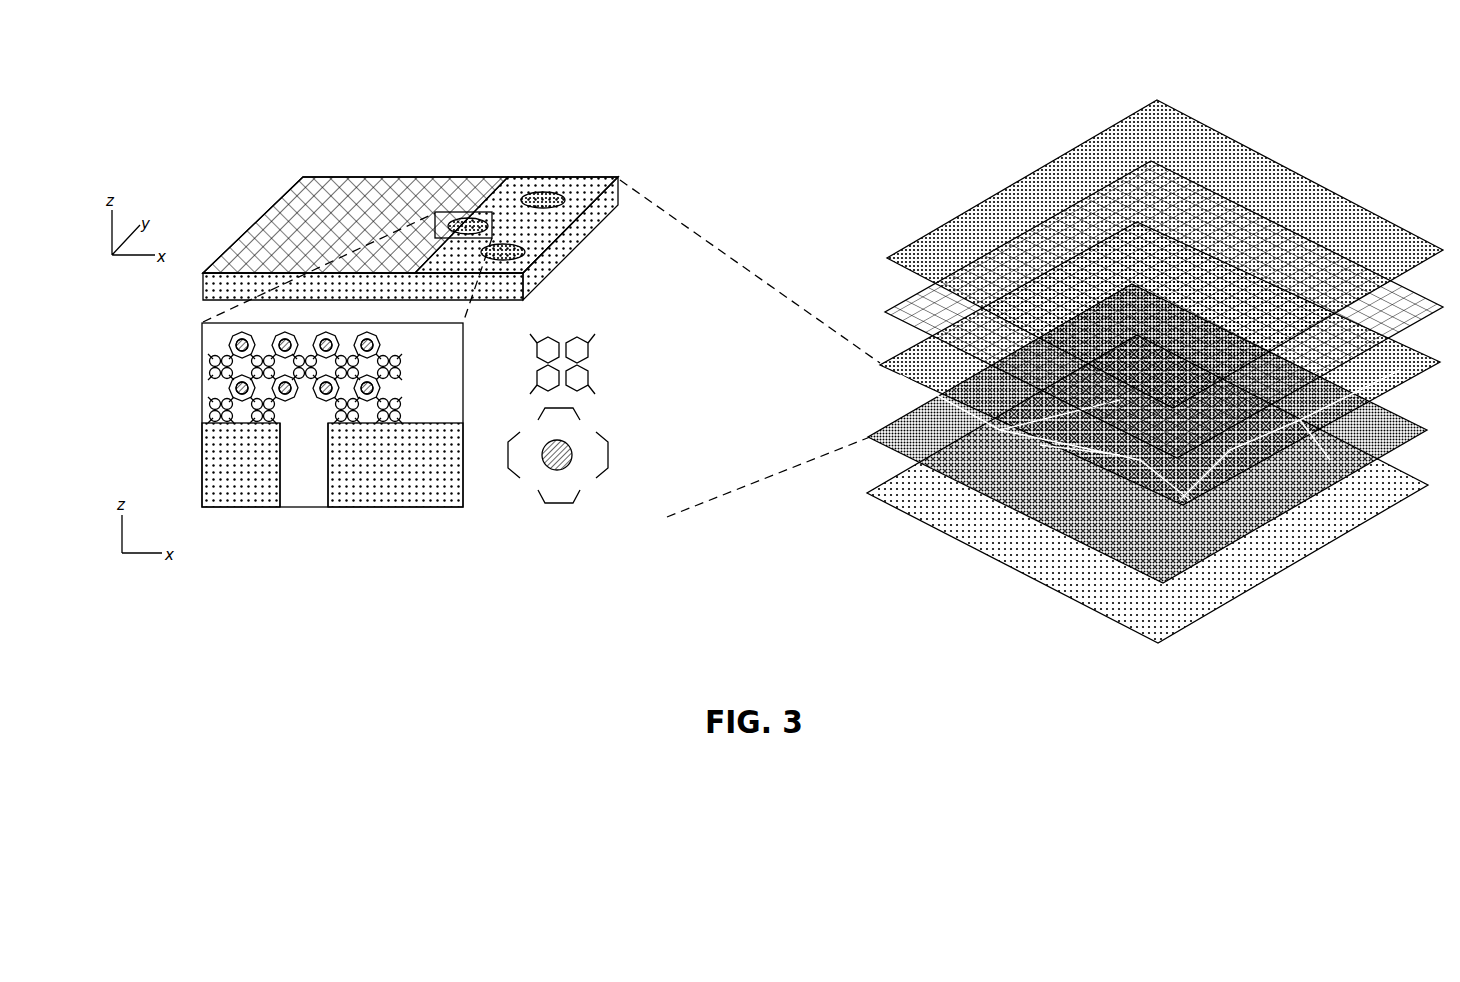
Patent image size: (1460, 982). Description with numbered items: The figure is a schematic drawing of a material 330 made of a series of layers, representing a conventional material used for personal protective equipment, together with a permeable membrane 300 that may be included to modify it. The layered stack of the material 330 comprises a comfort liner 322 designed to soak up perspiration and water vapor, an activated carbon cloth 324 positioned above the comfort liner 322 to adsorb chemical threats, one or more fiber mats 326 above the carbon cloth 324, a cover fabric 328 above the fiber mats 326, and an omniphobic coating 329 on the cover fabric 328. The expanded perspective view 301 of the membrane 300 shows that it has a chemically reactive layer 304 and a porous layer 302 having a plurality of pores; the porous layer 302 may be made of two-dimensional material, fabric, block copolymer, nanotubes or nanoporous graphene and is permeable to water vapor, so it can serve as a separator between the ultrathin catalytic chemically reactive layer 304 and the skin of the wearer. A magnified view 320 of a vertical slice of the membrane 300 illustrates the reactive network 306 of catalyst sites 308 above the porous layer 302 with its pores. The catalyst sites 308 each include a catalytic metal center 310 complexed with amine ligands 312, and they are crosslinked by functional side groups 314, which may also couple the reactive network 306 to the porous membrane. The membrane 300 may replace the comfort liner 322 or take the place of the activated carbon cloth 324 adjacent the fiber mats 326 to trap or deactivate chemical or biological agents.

The membrane 300 is at (494, 172).
The expanded perspective view 301 is at (258, 156).
The porous first layer 302 is at (588, 192).
The chemically reactive layer 304 is at (355, 225).
The reactive network 306 is at (210, 346).
The catalyst sites 308 is at (590, 505).
The catalytic metal center 310 is at (572, 456).
The amine ligands 312 is at (535, 500).
The functional side groups 314 is at (213, 416).
The magnified view 320 is at (126, 378).
The comfort liner 322 is at (1147, 489).
The activated carbon cloth 324 is at (1147, 433).
The fiber mats 326 is at (1160, 363).
The cover fabric 328 is at (1164, 309).
The omniphobic coating 329 is at (1165, 254).
The material 330 is at (1325, 98).